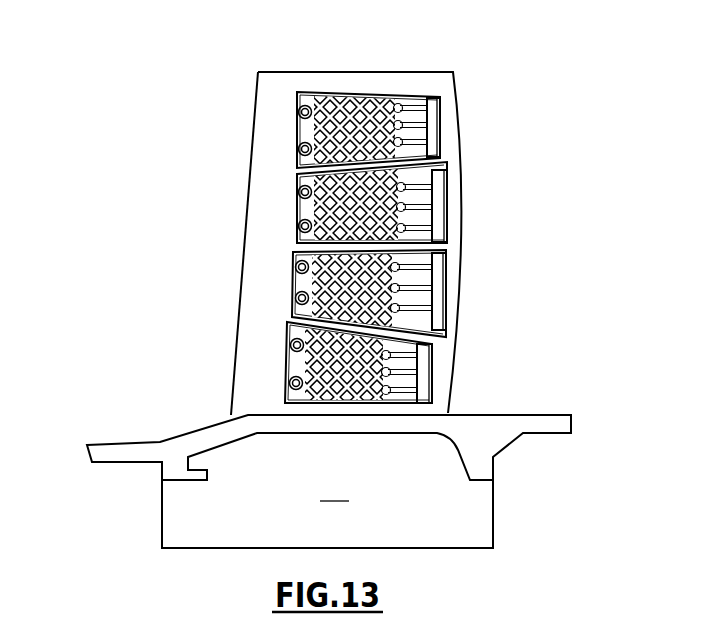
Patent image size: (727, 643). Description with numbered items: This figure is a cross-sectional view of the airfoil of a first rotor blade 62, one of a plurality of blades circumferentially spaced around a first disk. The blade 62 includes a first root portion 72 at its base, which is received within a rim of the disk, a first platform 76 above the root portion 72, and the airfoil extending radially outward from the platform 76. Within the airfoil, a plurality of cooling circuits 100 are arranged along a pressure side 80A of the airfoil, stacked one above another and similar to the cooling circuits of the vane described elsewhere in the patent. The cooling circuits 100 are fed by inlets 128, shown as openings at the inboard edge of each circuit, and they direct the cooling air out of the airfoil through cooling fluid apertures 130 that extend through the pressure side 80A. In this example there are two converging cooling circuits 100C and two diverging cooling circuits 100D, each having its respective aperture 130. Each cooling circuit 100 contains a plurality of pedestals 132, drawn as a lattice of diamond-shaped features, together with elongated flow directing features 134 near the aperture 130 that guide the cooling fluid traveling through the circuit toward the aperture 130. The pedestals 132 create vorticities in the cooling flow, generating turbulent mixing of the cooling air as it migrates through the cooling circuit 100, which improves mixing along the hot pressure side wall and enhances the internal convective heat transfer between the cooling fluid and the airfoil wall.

The first rotor blade 62 is at (525, 170).
The first root portion 72 is at (334, 488).
The first platform 76 is at (562, 415).
The pressure side 80A is at (252, 305).
The cooling circuit 100 is at (383, 204).
The converging cooling circuit 100C is at (445, 107).
The diverging cooling circuit 100D is at (447, 213).
The inlet 128 is at (298, 146).
The cooling fluid aperture 130 is at (435, 137).
The pedestal 132 is at (352, 100).
The elongated flow directing feature 134 is at (393, 105).